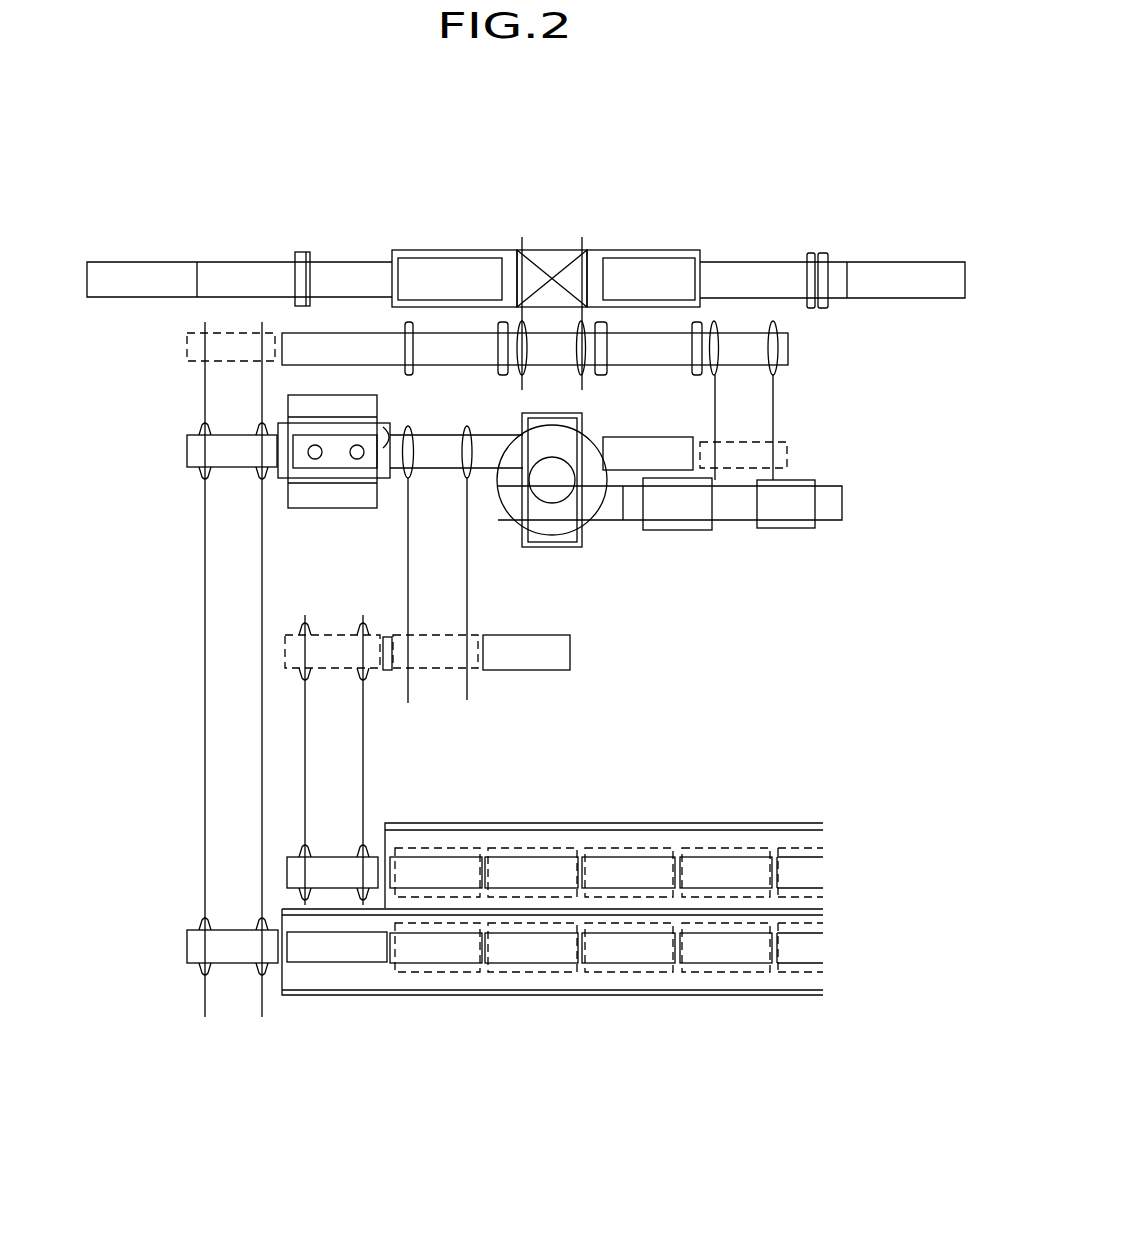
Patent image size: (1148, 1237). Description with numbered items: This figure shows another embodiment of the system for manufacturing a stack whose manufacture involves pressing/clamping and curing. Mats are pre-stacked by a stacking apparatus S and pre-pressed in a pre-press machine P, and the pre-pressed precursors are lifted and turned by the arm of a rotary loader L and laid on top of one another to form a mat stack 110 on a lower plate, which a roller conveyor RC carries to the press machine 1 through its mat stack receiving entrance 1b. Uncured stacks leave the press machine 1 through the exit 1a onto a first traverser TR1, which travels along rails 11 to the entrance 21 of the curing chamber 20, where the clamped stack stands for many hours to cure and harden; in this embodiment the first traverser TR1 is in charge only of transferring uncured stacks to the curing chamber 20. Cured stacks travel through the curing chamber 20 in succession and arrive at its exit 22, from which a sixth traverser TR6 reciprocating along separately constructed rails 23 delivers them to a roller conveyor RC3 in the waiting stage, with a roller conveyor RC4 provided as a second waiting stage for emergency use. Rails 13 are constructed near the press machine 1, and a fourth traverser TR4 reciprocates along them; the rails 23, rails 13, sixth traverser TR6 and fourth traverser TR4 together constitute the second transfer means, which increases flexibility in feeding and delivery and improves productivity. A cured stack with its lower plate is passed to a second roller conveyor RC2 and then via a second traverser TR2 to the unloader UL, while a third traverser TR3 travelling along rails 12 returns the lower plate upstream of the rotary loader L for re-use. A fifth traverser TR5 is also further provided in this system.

The unloader UL is at (560, 230).
The second traverser TR2 is at (548, 340).
The second roller conveyor RC2 is at (338, 342).
The third traverser TR3 is at (740, 347).
The fifth traverser TR5 is at (187, 345).
The first traverser TR1 is at (195, 450).
The press machine 1 is at (320, 498).
The exit of the press machine 1a is at (275, 452).
The mat stack receiving entrance 1b is at (385, 425).
The fourth traverser TR4 is at (445, 448).
The rails 13 is at (408, 540).
The rotary loader L is at (572, 537).
The roller conveyor RC is at (657, 448).
The rails 12 is at (775, 420).
The pre-press machine P is at (705, 528).
The stacking apparatus S is at (798, 528).
The roller conveyor RC3 is at (387, 635).
The roller conveyor RC4 is at (560, 657).
The rails 11 is at (205, 738).
The rails 23 is at (363, 743).
The exit of the curing chamber 22 is at (552, 833).
The mat stack 110 is at (457, 850).
The sixth traverser TR6 is at (295, 872).
The entrance of the curing chamber 21 is at (282, 977).
The curing chamber 20 is at (550, 987).